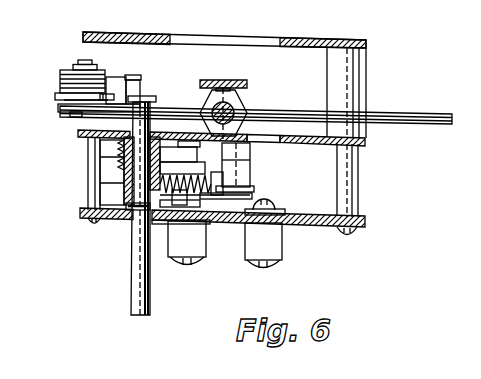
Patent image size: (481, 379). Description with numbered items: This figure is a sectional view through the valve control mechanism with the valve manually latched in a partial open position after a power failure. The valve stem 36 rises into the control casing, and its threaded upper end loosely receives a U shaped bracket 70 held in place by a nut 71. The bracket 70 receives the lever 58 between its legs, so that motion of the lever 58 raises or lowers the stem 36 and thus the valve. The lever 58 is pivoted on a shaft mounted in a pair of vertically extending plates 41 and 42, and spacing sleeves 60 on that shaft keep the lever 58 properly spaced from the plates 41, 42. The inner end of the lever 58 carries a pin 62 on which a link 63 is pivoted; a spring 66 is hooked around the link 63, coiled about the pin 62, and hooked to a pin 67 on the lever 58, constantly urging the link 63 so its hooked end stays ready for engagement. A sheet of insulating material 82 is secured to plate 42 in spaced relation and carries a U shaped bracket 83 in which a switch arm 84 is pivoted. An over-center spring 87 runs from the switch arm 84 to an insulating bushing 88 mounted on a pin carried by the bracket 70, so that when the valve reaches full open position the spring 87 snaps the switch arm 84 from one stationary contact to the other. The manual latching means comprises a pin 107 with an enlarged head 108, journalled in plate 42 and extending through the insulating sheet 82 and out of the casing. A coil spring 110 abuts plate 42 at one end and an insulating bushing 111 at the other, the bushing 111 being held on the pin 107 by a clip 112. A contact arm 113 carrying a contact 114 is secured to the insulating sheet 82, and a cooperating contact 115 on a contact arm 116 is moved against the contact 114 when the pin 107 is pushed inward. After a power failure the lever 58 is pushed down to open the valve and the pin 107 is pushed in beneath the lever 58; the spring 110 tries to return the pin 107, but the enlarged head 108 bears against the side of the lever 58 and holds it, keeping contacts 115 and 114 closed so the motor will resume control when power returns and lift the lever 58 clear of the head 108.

The plate 41 is at (320, 39).
The spacing sleeves 60 is at (355, 92).
The lever 58 is at (422, 118).
The plate 42 is at (365, 144).
The sheet of insulating material 82 is at (367, 222).
The pin 62 is at (87, 59).
The link 63 is at (57, 98).
The spring 66 is at (118, 76).
The pin 67 is at (138, 75).
The enlarged head 108 is at (152, 99).
The pin 107 is at (138, 297).
The coil spring 110 is at (120, 149).
The insulating bushing 111 is at (124, 180).
The contact 114 is at (128, 195).
The clip 112 is at (136, 220).
The switch arm 84 is at (172, 150).
The U shaped bracket 83 is at (200, 143).
The over-center spring 87 is at (212, 192).
The nut 71 is at (248, 112).
The U shaped bracket 70 is at (243, 84).
The valve stem 36 is at (225, 86).
The insulating bushing 88 is at (251, 174).
The contact 115 is at (168, 224).
The contact arm 116 is at (187, 243).
The contact arm 113 is at (243, 219).